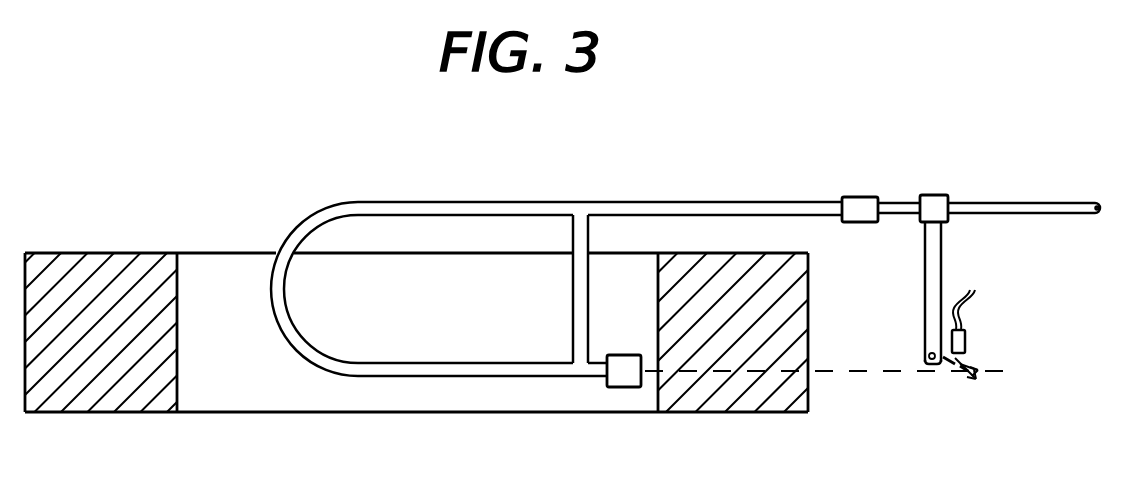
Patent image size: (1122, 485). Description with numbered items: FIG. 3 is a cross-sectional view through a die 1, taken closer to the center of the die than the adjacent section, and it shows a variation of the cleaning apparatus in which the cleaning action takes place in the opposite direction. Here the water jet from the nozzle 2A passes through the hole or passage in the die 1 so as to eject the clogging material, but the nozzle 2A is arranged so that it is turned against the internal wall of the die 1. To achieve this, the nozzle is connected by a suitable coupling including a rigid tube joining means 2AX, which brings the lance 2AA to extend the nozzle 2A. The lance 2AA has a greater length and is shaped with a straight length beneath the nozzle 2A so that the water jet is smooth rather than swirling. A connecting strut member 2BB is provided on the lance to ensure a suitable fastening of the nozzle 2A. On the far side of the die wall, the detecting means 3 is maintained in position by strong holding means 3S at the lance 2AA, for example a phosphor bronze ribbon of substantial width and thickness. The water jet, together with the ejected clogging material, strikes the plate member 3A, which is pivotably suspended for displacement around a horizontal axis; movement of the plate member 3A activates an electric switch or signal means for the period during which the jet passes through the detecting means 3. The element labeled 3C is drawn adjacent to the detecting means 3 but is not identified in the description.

The die 1 is at (332, 413).
The nozzle 2A is at (616, 388).
The lance 2AA is at (1004, 200).
The rigid tube joining means 2AX is at (857, 197).
The connecting strut member 2BB is at (583, 240).
The detecting means 3 is at (924, 354).
The holding means 3S is at (936, 195).
The plate member 3A is at (951, 371).
The sensor cable connector 3C is at (965, 333).